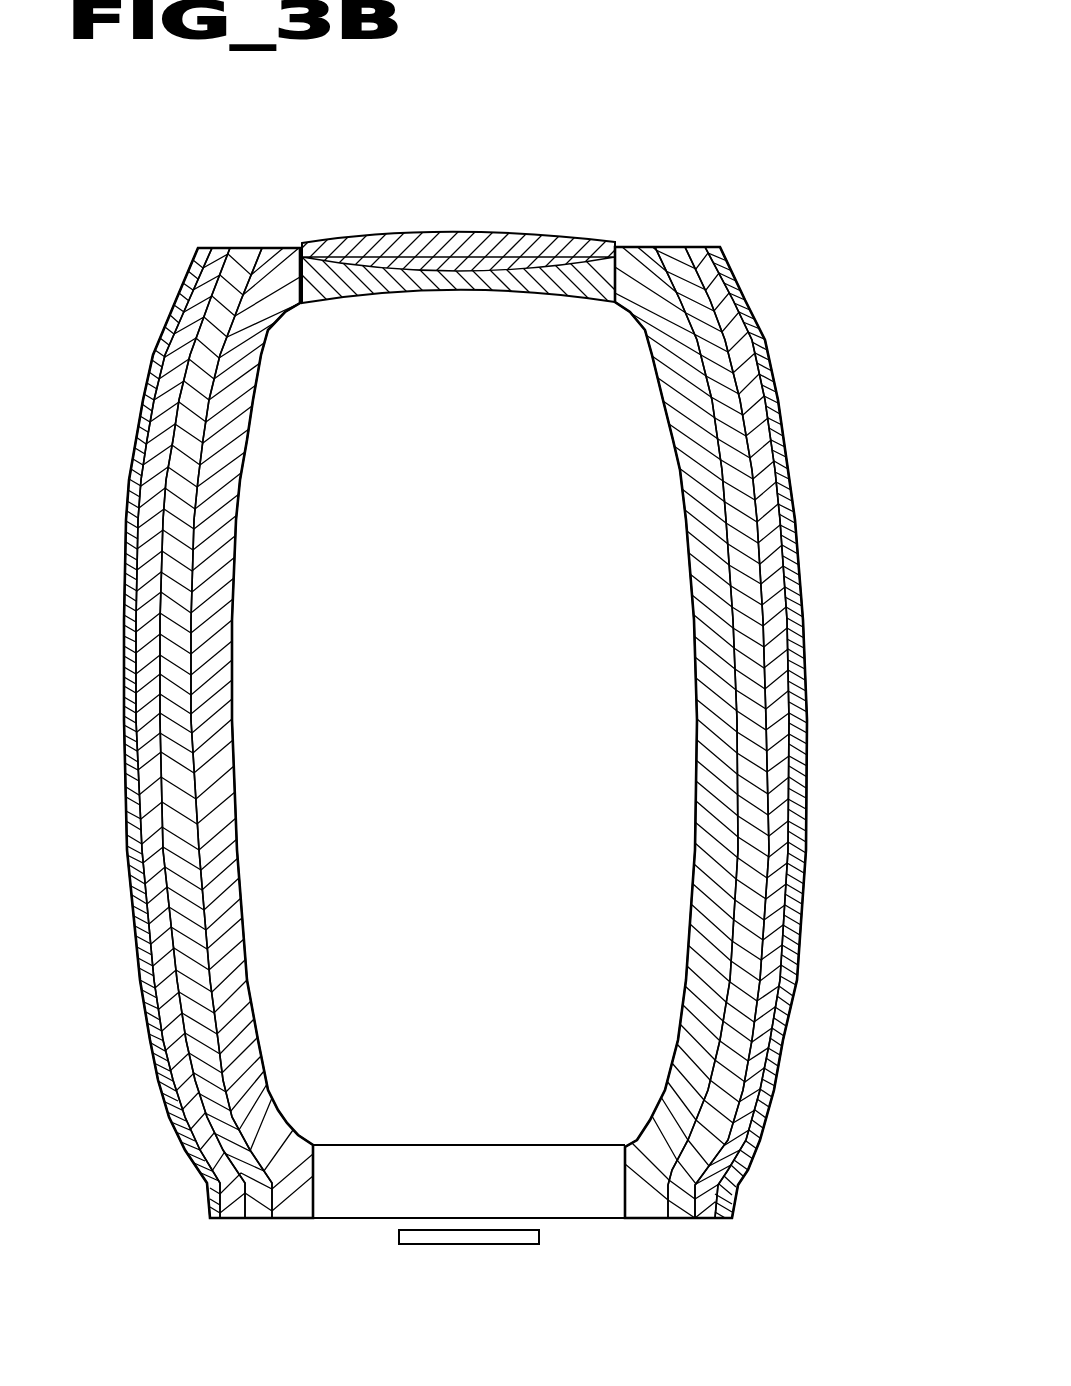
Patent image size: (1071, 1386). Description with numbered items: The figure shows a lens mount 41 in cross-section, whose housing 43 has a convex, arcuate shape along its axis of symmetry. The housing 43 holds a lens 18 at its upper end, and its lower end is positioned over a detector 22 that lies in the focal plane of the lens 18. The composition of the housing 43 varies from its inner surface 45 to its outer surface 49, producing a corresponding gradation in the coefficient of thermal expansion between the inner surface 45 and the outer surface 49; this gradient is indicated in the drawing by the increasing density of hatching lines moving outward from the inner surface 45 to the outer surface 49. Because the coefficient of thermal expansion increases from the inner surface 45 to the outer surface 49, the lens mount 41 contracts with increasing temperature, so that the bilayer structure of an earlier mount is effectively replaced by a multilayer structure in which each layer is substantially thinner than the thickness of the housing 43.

The lens 18 is at (490, 268).
The detector 22 is at (498, 1244).
The lens mount 41 is at (512, 691).
The housing 43 is at (808, 737).
The inner surface 45 is at (690, 568).
The outer surface 49 is at (760, 1147).